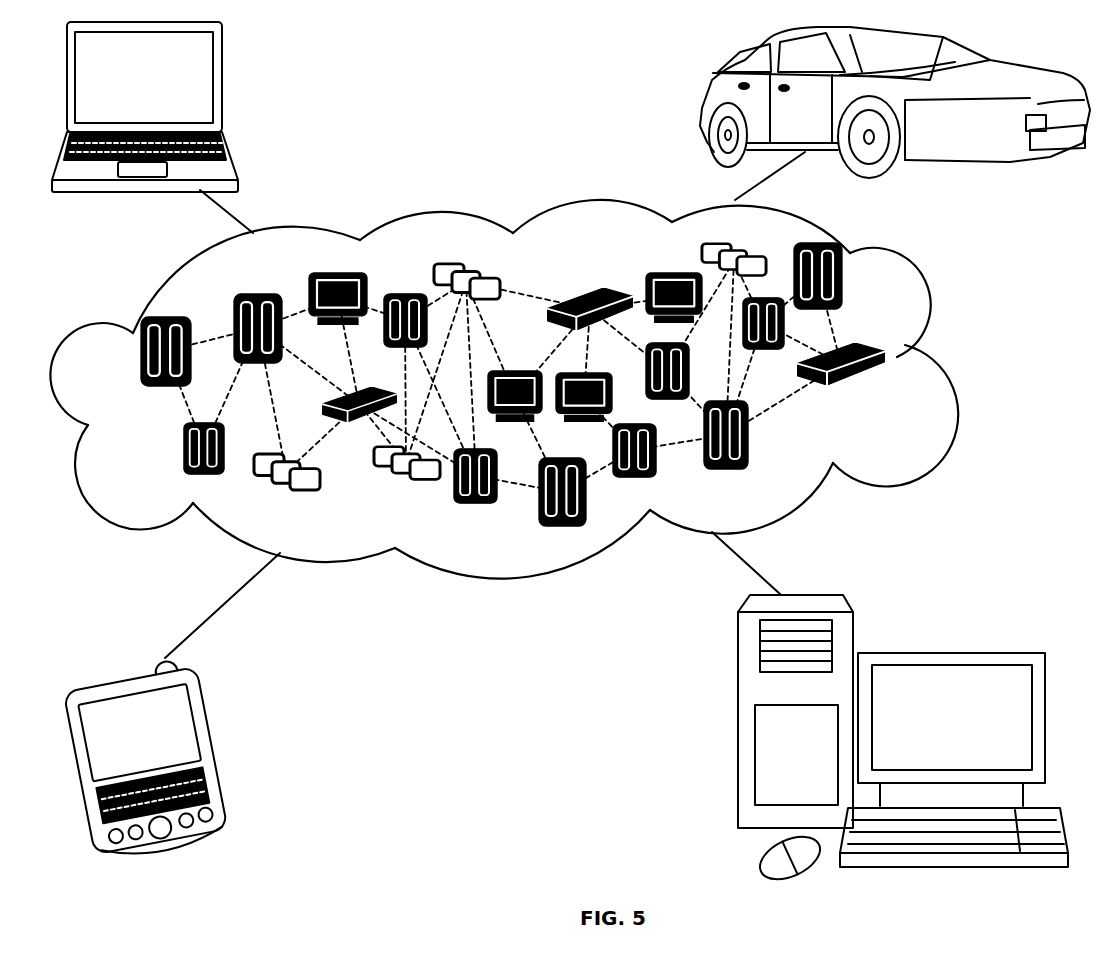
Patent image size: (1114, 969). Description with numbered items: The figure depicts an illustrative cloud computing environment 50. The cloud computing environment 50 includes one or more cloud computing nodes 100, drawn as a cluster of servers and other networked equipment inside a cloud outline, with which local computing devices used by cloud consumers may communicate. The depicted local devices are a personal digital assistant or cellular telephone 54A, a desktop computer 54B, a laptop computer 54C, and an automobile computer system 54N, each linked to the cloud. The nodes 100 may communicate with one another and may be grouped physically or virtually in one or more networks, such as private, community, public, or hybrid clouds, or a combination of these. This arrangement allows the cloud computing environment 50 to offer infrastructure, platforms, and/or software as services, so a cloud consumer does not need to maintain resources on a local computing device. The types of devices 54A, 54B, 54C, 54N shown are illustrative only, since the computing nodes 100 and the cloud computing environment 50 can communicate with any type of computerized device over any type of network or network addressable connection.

The cloud computing environment 50 is at (952, 363).
The cloud computing nodes 100 is at (583, 384).
The personal digital assistant or cellular telephone 54A is at (210, 750).
The desktop computer 54B is at (948, 655).
The laptop computer 54C is at (225, 87).
The automobile computer system 54N is at (707, 100).